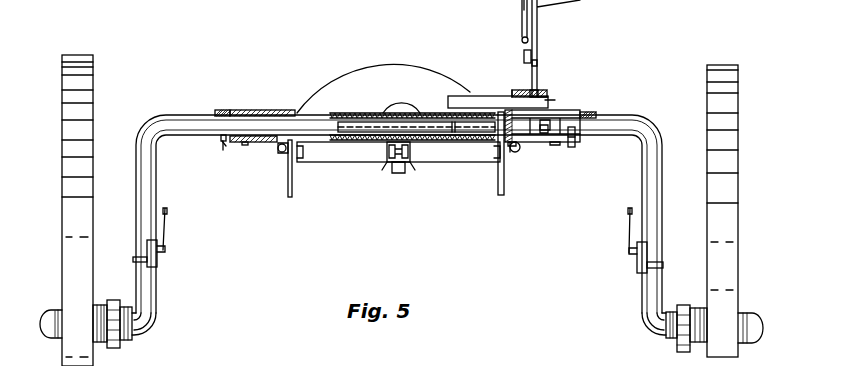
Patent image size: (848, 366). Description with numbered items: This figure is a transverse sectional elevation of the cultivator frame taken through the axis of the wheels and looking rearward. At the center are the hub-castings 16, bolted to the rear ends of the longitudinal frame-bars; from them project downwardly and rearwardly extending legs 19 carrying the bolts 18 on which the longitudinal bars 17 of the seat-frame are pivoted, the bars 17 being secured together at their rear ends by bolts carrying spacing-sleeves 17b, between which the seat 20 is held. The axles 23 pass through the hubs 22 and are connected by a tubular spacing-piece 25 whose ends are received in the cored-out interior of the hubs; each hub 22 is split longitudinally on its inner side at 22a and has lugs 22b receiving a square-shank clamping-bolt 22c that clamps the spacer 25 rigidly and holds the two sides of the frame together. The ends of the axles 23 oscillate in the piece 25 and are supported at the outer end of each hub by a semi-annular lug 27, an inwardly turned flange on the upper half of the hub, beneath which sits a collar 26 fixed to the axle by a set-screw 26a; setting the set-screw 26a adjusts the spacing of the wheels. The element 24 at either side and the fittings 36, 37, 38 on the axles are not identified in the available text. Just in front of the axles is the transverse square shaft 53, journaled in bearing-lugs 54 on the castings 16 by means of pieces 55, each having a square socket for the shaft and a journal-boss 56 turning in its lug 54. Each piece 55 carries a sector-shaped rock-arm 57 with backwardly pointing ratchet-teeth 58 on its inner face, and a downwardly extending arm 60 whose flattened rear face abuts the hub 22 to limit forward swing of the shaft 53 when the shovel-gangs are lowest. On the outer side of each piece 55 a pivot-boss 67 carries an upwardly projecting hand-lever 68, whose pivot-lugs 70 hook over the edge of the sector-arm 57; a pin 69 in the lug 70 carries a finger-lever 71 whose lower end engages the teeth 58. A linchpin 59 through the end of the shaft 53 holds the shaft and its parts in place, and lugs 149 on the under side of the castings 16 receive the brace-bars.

The hub-castings 16 is at (520, 148).
The longitudinal bars 17 is at (412, 164).
The spacing-sleeves 17b is at (410, 152).
The pivot-bolts 18 is at (301, 150).
The legs 19 is at (292, 185).
The seat 20 is at (383, 88).
The hubs 22 is at (255, 110).
The split 22a is at (268, 142).
The lugs 22b is at (515, 152).
The square-shank clamping-bolt 22c is at (280, 152).
The axles 23 is at (136, 217).
The post 24 is at (62, 250).
The tubular spacing-piece 25 is at (368, 113).
The collar 26 is at (222, 140).
The set-screw 26a is at (224, 144).
The semi-annular lug 27 is at (220, 110).
The valve lever 36 is at (167, 228).
The valve body 37 is at (157, 255).
The valve tab 38 is at (133, 260).
The transverse square shaft 53 is at (468, 96).
The bearing-lugs 54 is at (515, 92).
The pieces 55 is at (535, 92).
The journal-boss 56 is at (512, 94).
The sector-shaped rock-arm 57 is at (538, 62).
The ratchet-teeth 58 is at (524, 56).
The linchpin 59 is at (551, 99).
The downwardly-extending arm 60 is at (547, 135).
The pivot-boss 67 is at (541, 97).
The hand-lever 68 is at (537, 30).
The pin 69 is at (522, 40).
The pivot-lugs 70 is at (520, 30).
The finger-lever 71 is at (522, 10).
The lugs 149 is at (556, 145).